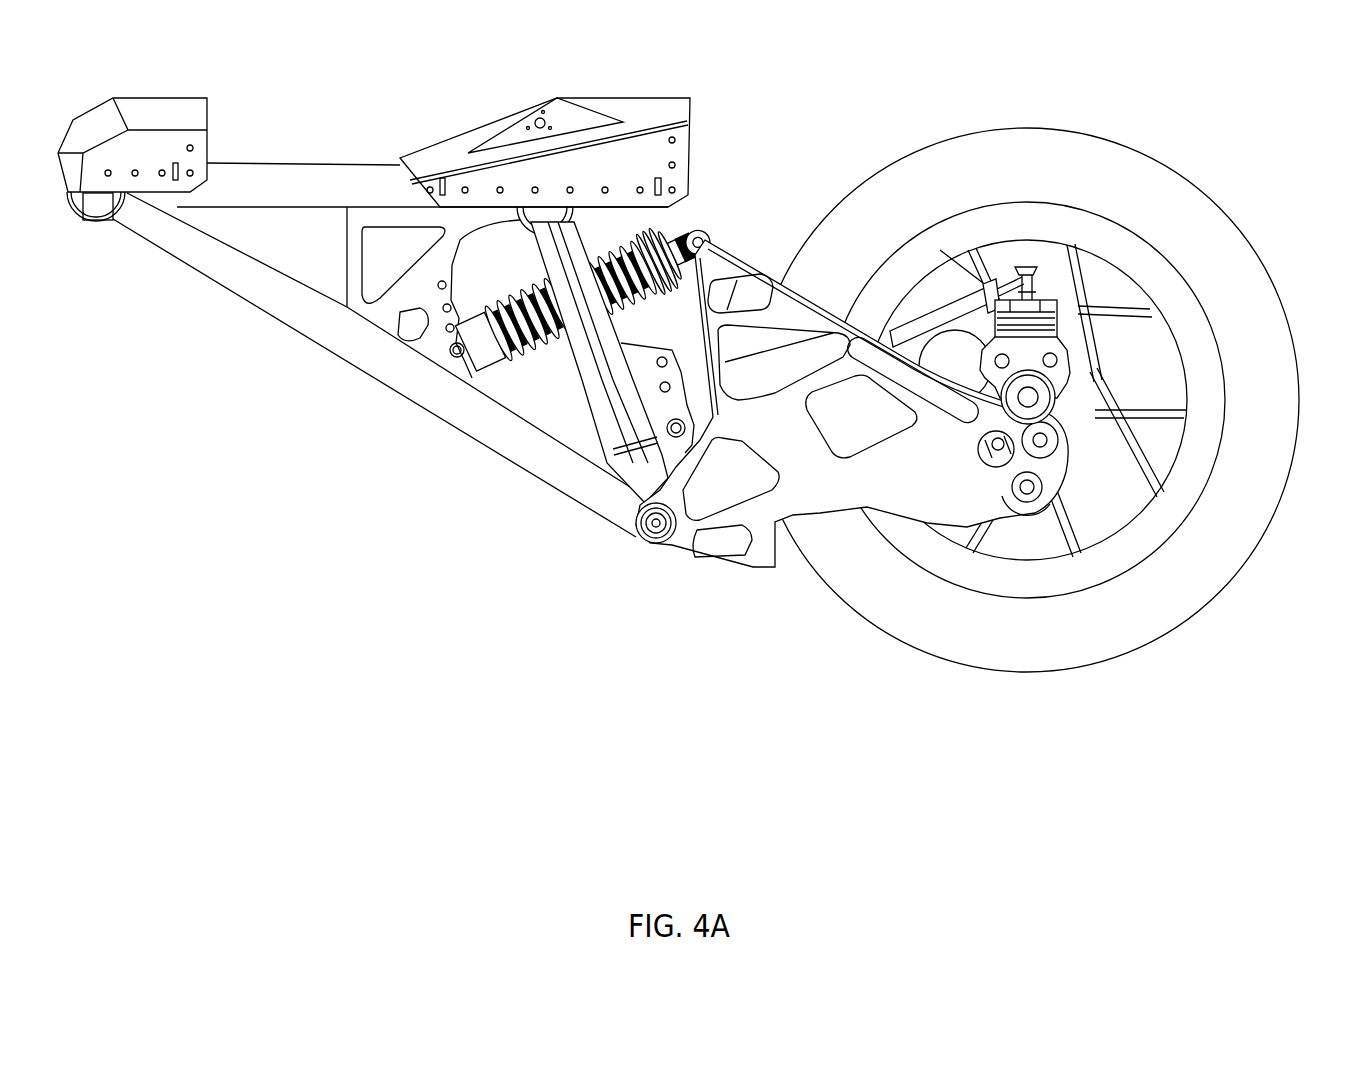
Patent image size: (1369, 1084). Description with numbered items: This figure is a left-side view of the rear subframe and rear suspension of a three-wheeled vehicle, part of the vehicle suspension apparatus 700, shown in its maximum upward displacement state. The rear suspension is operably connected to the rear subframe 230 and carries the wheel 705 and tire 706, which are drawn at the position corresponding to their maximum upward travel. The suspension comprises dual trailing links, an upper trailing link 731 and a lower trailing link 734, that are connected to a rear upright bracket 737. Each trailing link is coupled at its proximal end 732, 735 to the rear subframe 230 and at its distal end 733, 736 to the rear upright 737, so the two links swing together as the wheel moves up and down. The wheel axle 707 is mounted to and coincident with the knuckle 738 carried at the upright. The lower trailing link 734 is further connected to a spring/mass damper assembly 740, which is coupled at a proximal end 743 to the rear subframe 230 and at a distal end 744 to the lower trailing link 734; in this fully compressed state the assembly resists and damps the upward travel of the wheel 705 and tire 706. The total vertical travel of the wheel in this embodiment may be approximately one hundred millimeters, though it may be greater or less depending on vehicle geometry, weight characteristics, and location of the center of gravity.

The rear subframe 230 is at (242, 275).
The vehicle suspension apparatus 700 is at (311, 564).
The wheel 705 is at (1030, 205).
The tire 706 is at (1030, 676).
The wheel axle 707 is at (1031, 397).
The upper trailing link 731 is at (940, 312).
The proximal end 732 is at (674, 430).
The distal end 733 is at (1028, 282).
The lower trailing link 734 is at (802, 485).
The proximal end 735 is at (655, 523).
The distal end 736 is at (1030, 489).
The rear upright bracket 737 is at (1063, 398).
The knuckle 738 is at (1158, 274).
The spring/mass damper assembly 740 is at (488, 276).
The proximal end 743 is at (455, 351).
The distal end 744 is at (704, 243).